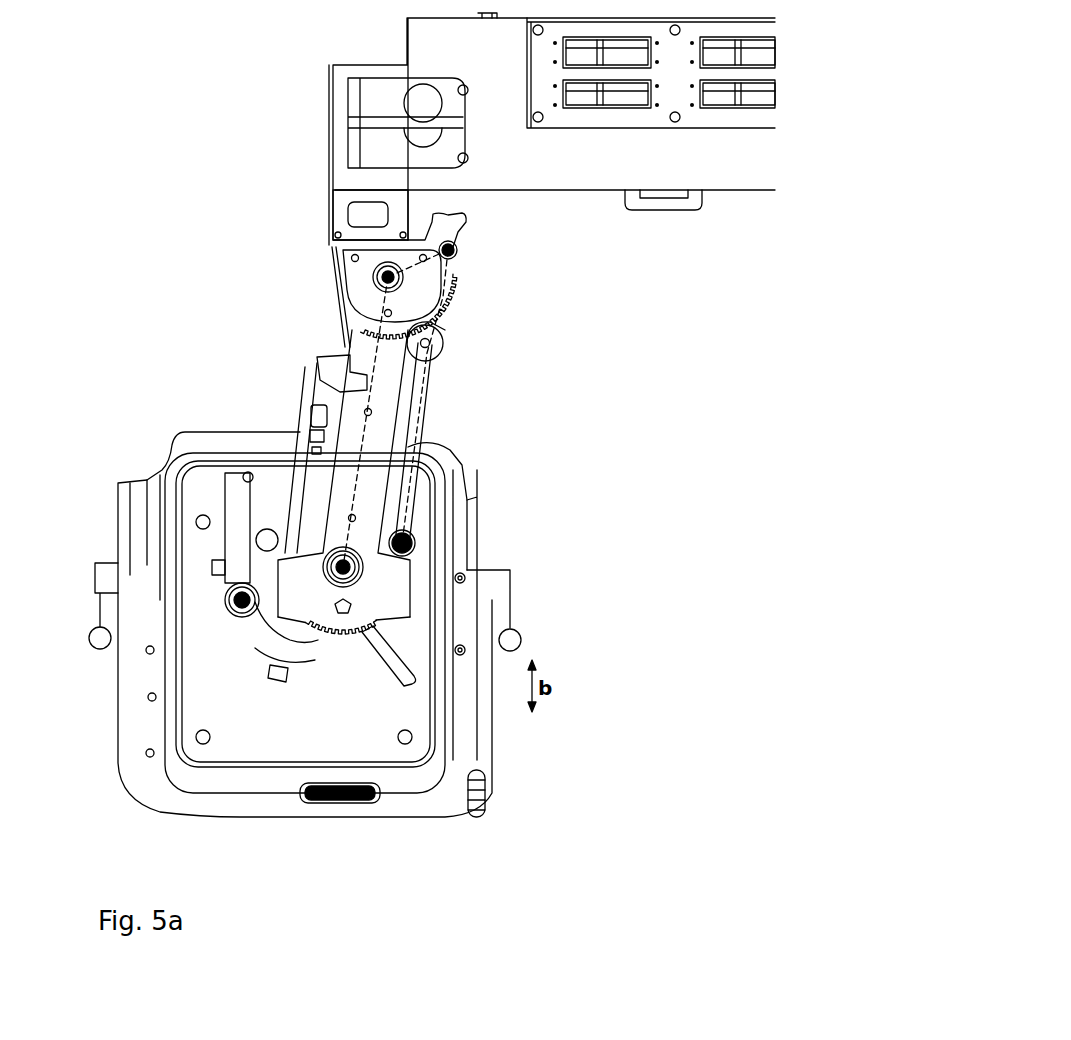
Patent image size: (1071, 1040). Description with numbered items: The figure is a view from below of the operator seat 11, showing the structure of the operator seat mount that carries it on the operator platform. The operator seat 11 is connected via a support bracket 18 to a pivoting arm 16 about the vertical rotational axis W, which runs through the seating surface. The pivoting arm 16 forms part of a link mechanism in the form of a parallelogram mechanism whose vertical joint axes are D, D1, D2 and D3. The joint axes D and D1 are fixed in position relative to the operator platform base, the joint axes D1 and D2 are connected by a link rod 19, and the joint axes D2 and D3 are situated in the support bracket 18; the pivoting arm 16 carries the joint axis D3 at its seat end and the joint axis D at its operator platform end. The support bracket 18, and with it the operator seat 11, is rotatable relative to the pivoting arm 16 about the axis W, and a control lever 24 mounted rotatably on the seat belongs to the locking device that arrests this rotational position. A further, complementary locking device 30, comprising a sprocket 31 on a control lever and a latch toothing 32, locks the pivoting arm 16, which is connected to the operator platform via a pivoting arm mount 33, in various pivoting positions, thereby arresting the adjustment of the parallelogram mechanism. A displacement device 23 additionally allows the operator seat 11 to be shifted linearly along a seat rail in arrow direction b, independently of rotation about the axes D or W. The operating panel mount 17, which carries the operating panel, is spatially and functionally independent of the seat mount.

The operator seat 11 is at (225, 798).
The pivoting arm 16 is at (318, 400).
The operating panel mount 17 is at (232, 607).
The support bracket 18 is at (300, 607).
The link rod 19 is at (422, 405).
The displacement device 23 is at (568, 672).
The control lever 24 is at (237, 522).
The locking device 30 is at (358, 345).
The sprocket 31 is at (445, 345).
The latch toothing 32 is at (460, 300).
The pivoting arm mount 33 is at (378, 213).
The pivot axis D is at (376, 270).
The joint axis D1 is at (458, 256).
The joint axis D2 is at (415, 543).
The joint axis D3 is at (330, 555).
The vertical axis W is at (350, 582).